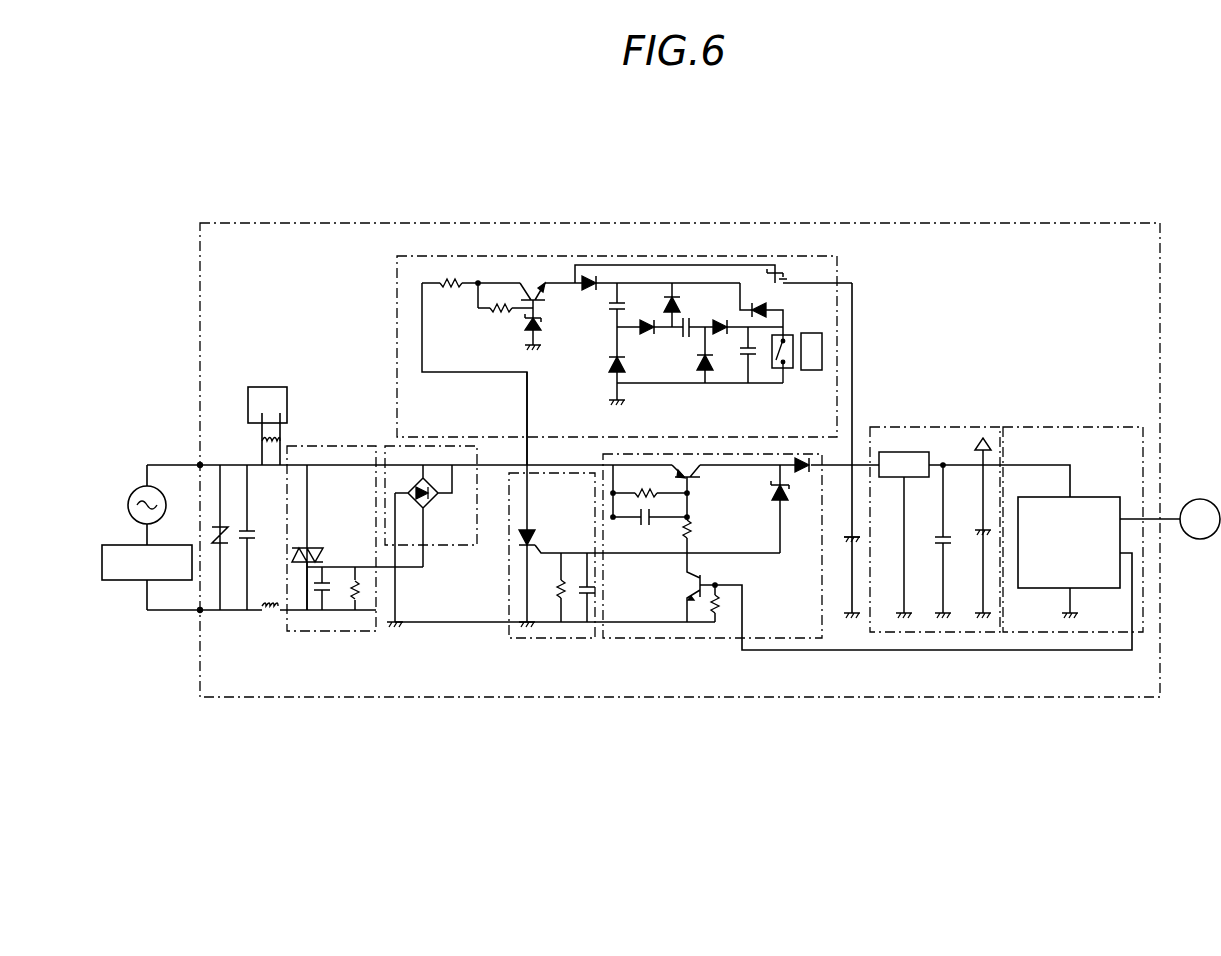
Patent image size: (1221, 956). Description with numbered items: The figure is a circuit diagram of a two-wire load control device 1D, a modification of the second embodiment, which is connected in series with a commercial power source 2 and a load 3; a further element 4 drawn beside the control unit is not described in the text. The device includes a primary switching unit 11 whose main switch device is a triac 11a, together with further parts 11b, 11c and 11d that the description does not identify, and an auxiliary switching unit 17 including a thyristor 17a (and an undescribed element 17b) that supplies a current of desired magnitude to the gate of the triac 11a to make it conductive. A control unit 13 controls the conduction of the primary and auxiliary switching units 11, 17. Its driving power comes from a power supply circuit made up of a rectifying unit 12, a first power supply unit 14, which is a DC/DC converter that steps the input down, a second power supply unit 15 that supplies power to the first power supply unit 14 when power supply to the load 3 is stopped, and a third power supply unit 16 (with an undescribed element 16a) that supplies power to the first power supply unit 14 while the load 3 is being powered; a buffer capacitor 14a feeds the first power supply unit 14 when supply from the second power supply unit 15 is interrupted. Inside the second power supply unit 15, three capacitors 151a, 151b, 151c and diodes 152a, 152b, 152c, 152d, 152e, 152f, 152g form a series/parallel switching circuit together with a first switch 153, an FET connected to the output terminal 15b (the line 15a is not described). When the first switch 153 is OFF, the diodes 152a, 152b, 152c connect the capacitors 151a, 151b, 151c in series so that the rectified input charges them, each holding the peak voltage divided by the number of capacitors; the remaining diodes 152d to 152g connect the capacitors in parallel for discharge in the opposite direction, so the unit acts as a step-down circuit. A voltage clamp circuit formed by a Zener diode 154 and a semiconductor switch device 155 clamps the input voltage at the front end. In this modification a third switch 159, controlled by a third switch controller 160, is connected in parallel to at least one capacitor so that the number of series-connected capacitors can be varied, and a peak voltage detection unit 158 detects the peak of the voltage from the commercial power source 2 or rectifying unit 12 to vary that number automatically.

The two-wire load control device 1D is at (603, 125).
The commercial power source 2 is at (134, 493).
The load 3 is at (114, 545).
The switch 4 is at (1200, 540).
The primary switching unit 11 is at (365, 446).
The triac 11a is at (296, 515).
The triac terminal 11b is at (305, 630).
The capacitor 11c is at (322, 612).
The resistor 11d is at (355, 602).
The rectifying unit 12 is at (442, 546).
The control unit 13 is at (1104, 497).
The first power supply unit 14 is at (937, 427).
The buffer capacitor 14a is at (855, 543).
The second power supply unit 15 is at (808, 254).
The connection line 15a is at (525, 465).
The output terminal 15b is at (855, 462).
The third power supply unit 16 is at (840, 462).
The zener diode 16a is at (784, 503).
The auxiliary switching unit 17 is at (538, 640).
The thyristor 17a is at (520, 548).
The resistor 17b is at (563, 603).
The capacitor 151a is at (620, 298).
The capacitor 151b is at (683, 338).
The capacitor 151c is at (748, 357).
The diode 152a is at (588, 276).
The diode 152b is at (638, 338).
The diode 152c is at (728, 320).
The diode 152d is at (677, 296).
The diode 152e is at (606, 368).
The diode 152f is at (703, 370).
The diode 152g is at (749, 302).
The first switch 153 is at (780, 268).
The Zener diode 154 is at (522, 320).
The semiconductor switch device 155 is at (533, 296).
The peak voltage detection unit 158 is at (255, 387).
The third switch 159 is at (781, 370).
The third switch controller 160 is at (812, 333).